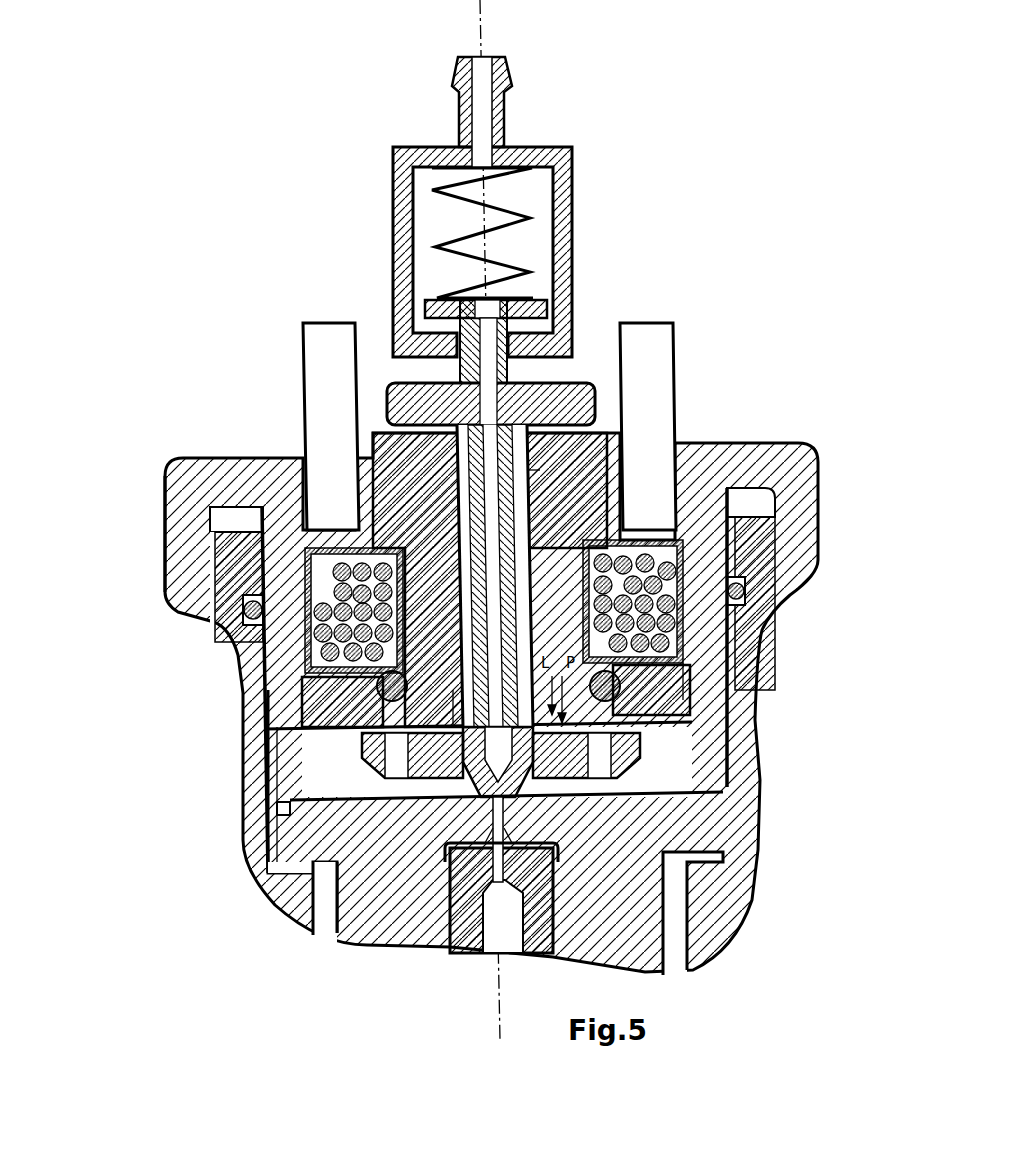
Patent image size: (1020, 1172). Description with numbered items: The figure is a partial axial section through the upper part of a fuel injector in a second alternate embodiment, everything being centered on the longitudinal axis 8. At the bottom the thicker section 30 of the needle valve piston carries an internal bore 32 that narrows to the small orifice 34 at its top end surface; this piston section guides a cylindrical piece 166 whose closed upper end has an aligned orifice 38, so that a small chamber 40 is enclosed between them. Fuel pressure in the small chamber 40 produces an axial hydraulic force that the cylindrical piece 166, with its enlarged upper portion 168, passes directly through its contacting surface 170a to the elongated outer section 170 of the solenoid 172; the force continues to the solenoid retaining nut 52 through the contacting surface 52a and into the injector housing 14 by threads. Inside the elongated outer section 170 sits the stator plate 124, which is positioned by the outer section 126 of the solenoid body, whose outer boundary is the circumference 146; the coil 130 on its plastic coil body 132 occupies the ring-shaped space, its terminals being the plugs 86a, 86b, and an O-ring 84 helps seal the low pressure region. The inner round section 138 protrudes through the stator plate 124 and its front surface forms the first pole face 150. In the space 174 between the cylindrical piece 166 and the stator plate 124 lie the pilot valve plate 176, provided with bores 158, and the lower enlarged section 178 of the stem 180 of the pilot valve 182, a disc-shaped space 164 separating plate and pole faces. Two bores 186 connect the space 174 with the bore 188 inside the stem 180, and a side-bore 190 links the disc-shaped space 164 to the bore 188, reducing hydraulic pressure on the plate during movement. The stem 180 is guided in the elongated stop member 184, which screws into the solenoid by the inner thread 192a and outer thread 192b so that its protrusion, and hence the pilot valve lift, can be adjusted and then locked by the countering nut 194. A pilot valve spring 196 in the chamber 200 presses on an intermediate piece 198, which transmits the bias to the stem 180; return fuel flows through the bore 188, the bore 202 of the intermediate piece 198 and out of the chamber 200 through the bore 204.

The longitudinal axis 8 is at (478, 17).
The injector housing 14 is at (725, 917).
The thicker section of the needle valve piston 30 is at (470, 935).
The bore 32 is at (513, 935).
The orifice 34 is at (493, 873).
The orifice 38 is at (492, 818).
The small chamber 40 is at (558, 845).
The solenoid retaining nut 52 is at (206, 470).
The contacting surface 52a is at (292, 490).
The O-ring 84 is at (745, 590).
The plug 86a is at (313, 345).
The plug 86b is at (665, 323).
The stator plate 124 is at (322, 712).
The outer section of the solenoid body 126 is at (278, 567).
The coil 130 is at (752, 540).
The coil body 132 is at (697, 488).
The inner round section 138 is at (692, 625).
The circumference of the solenoid body 146 is at (722, 690).
The first pole face 150 is at (725, 787).
The bores 158 is at (378, 778).
The disc-shaped space 164 is at (700, 727).
The cylindrical piece 166 is at (325, 907).
The enlarged upper portion 168 is at (305, 835).
The elongated outer section 170 is at (288, 760).
The contacting surface 170a is at (330, 815).
The solenoid 172 is at (740, 655).
The space 174 is at (318, 780).
The pilot valve plate 176 is at (642, 765).
The lower enlarged section 178 is at (595, 812).
The stem 180 is at (463, 703).
The pilot valve 182 is at (385, 683).
The elongated stop member 184 is at (458, 470).
The bores 186 is at (428, 800).
The bore 188 is at (478, 612).
The side-bore 190 is at (470, 760).
The inner thread 192a is at (533, 507).
The outer thread 192b is at (533, 472).
The countering nut 194 is at (577, 383).
The pilot valve spring 196 is at (425, 230).
The intermediate piece 198 is at (425, 305).
The chamber 200 is at (440, 270).
The bore 202 is at (460, 345).
The bore 204 is at (470, 113).